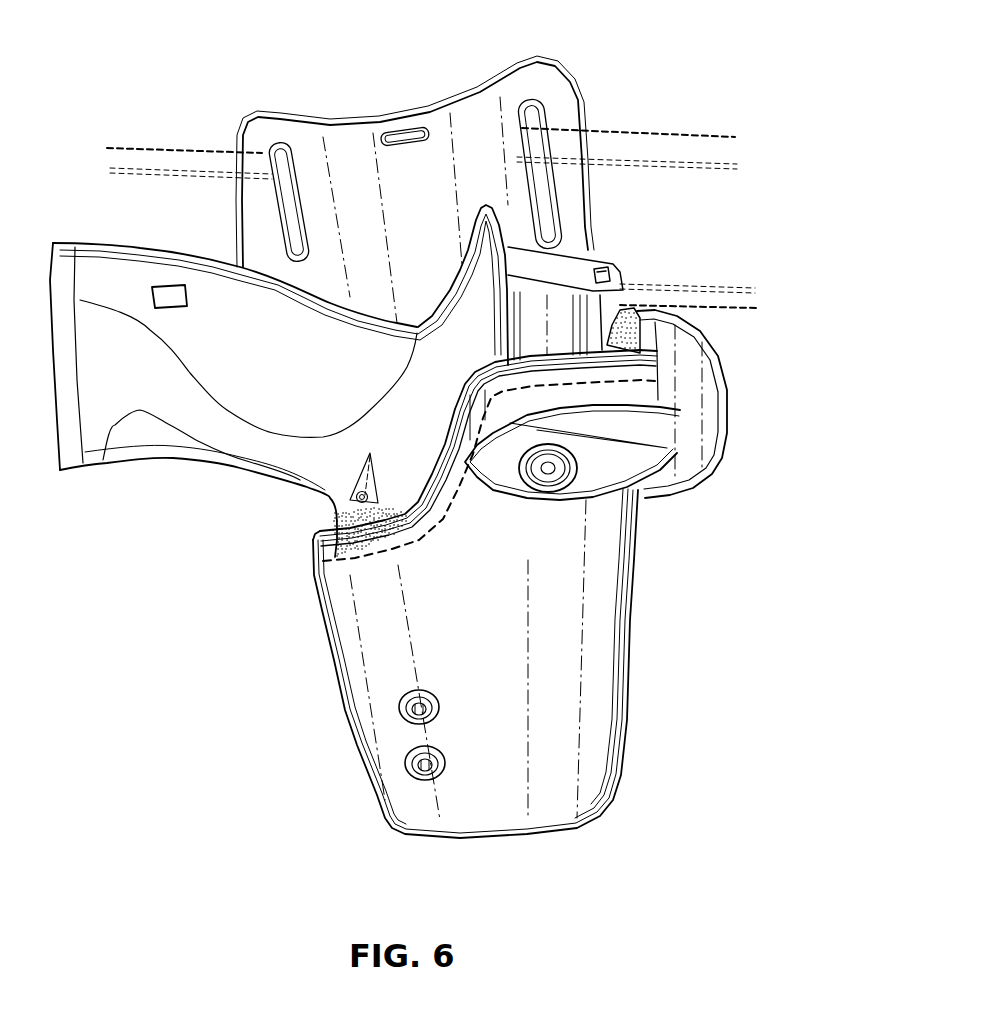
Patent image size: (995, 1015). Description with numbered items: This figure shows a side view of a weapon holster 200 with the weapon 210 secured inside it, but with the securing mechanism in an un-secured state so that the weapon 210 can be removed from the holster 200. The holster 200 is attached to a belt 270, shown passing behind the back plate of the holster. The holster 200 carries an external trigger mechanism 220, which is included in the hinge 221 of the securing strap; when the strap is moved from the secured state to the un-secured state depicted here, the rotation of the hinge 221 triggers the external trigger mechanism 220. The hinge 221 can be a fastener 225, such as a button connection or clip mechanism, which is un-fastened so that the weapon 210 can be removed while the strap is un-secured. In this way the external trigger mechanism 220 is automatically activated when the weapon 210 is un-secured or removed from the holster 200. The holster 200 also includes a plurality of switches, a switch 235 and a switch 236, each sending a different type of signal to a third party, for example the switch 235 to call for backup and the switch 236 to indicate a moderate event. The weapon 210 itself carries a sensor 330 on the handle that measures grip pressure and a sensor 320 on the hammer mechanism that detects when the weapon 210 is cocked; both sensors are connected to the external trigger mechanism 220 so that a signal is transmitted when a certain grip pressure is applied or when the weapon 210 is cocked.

The weapon holster 200 is at (598, 682).
The weapon 210 is at (197, 467).
The external trigger mechanism 220 is at (575, 452).
The hinge 221 is at (548, 472).
The fastener 225 is at (563, 467).
The switch 235 is at (405, 702).
The switch 236 is at (411, 757).
The belt 270 is at (183, 150).
The sensor 320 is at (603, 268).
The sensor 330 is at (168, 292).